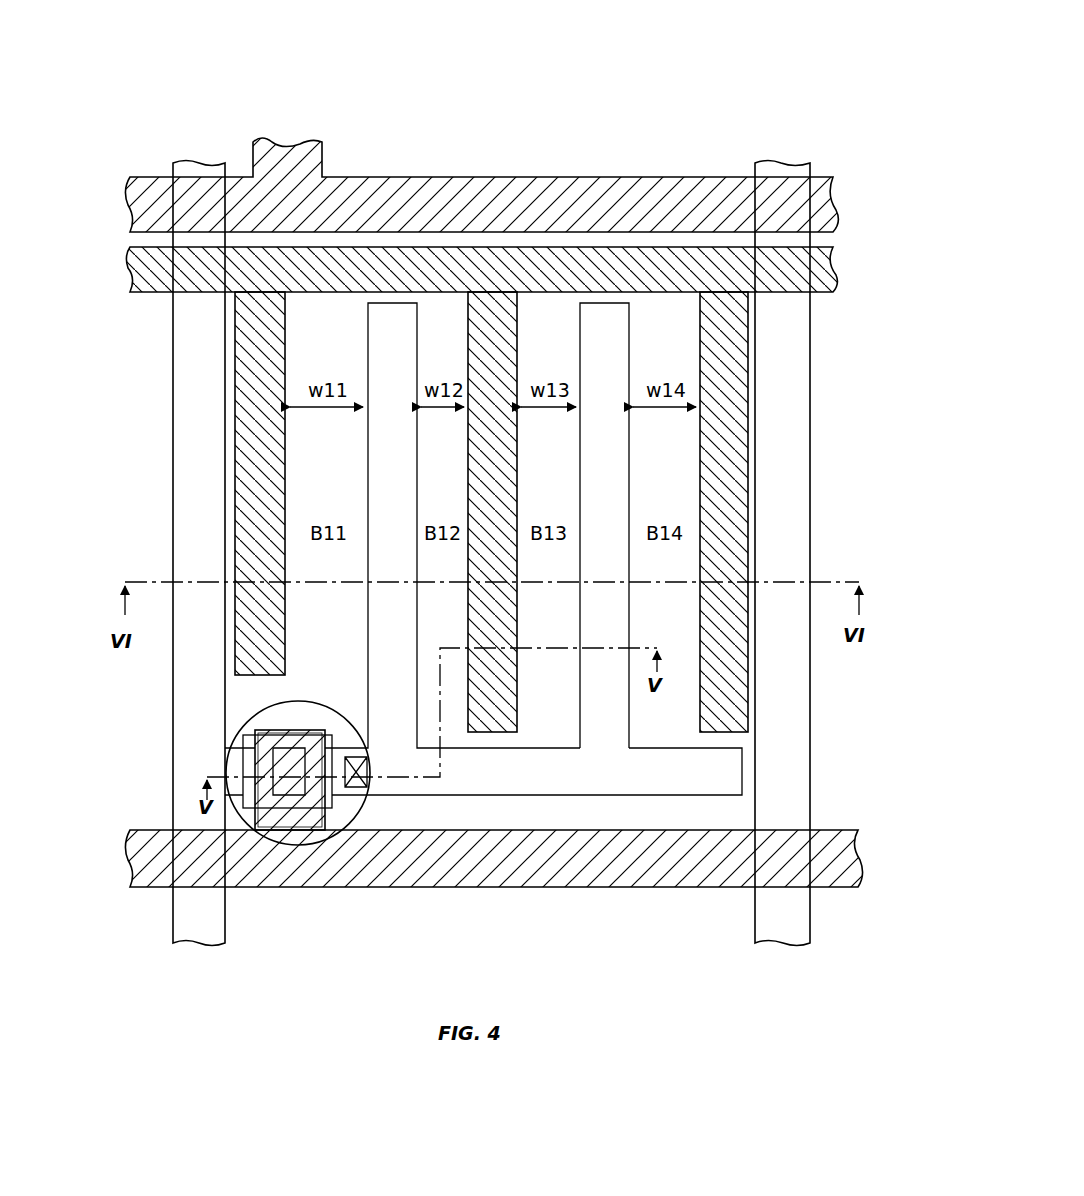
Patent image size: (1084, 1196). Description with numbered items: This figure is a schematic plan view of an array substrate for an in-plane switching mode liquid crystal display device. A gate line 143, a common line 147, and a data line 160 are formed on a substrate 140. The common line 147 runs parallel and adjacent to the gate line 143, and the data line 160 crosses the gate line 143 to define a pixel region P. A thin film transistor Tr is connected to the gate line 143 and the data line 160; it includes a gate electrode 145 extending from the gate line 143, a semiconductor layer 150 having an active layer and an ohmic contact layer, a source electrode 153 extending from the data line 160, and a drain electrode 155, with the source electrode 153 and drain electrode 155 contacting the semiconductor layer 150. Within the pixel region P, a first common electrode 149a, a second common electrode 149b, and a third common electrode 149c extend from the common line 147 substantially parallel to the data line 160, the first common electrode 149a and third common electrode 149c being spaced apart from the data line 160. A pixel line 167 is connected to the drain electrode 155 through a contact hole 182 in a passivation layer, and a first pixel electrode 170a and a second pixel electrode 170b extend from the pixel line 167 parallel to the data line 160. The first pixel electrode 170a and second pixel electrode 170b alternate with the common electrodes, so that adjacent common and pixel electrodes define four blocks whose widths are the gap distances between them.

The substrate 140 is at (507, 128).
The gate line 143 is at (658, 878).
The gate electrode 145 is at (270, 825).
The common line 147 is at (820, 273).
The first common electrode 149a is at (248, 355).
The second common electrode 149b is at (497, 735).
The third common electrode 149c is at (740, 670).
The semiconductor layer 150 is at (325, 795).
The source electrode 153 is at (237, 773).
The drain electrode 155 is at (340, 752).
The data line 160 is at (187, 420).
The pixel line 167 is at (670, 770).
The first pixel electrode 170a is at (397, 313).
The second pixel electrode 170b is at (600, 318).
The contact hole 182 is at (367, 787).
The thin film transistor Tr is at (330, 815).
The pixel region P is at (658, 318).